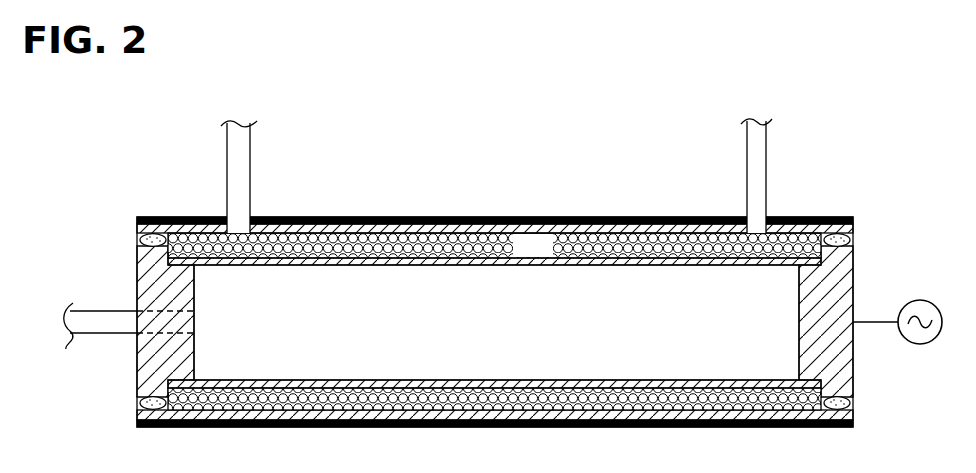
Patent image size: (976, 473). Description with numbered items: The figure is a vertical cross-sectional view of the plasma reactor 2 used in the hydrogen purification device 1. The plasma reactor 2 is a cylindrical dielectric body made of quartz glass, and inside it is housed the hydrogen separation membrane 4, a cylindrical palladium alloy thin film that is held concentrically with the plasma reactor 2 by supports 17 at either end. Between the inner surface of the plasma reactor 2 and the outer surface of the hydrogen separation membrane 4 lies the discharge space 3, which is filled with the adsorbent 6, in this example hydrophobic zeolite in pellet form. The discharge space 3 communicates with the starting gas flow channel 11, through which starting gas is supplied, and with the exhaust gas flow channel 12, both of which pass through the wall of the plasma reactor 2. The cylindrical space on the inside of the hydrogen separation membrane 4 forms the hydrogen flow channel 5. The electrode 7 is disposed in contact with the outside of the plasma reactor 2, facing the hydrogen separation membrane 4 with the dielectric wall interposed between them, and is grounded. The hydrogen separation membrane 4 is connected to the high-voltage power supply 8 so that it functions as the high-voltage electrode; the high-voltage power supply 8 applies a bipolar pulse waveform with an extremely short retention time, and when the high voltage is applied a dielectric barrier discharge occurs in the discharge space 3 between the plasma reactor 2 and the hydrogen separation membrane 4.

The hydrogen purification device 1 is at (503, 245).
The plasma reactor 2 is at (465, 219).
The discharge space 3 is at (494, 321).
The hydrogen separation membrane 4 is at (223, 266).
The hydrogen flow channel 5 is at (492, 330).
The adsorbent 6 is at (494, 286).
The electrode 7 is at (400, 226).
The high-voltage power supply 8 is at (917, 305).
The starting gas flow channel 11 is at (766, 170).
The exhaust gas flow channel 12 is at (232, 180).
The support 17 is at (147, 270).